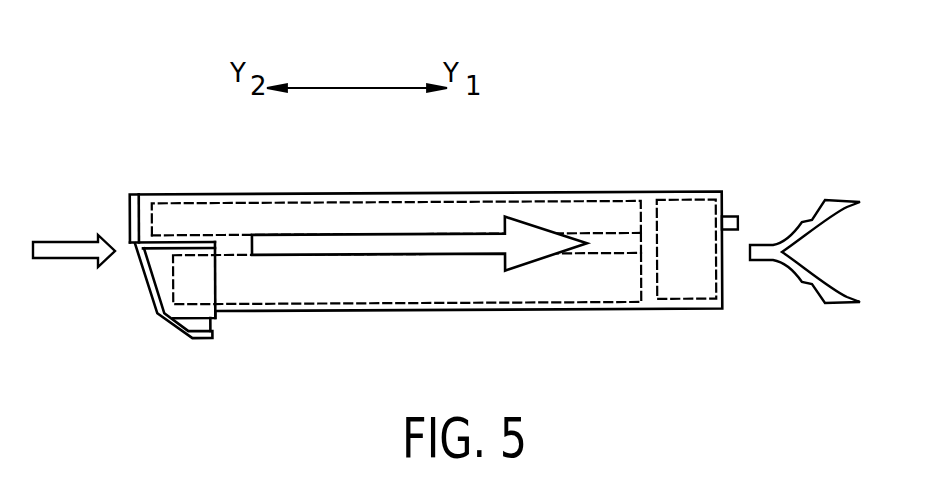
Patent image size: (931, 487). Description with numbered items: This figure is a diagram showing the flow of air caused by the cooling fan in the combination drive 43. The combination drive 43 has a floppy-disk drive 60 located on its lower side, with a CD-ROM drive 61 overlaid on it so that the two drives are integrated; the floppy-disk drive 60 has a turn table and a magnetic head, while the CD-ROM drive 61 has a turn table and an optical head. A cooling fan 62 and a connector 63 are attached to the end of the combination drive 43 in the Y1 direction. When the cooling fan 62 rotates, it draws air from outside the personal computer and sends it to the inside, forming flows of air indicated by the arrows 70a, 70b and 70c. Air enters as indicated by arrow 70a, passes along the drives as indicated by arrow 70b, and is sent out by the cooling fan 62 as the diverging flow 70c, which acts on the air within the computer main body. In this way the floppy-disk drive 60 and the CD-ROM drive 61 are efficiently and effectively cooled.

The combination drive 43 is at (557, 39).
The floppy-disk drive 60 is at (547, 290).
The CD-ROM drive 61 is at (538, 203).
The cooling fan 62 is at (685, 202).
The connector 63 is at (733, 215).
The arrow 70a is at (70, 258).
The arrow 70b is at (380, 254).
The flow of air 70c is at (823, 289).